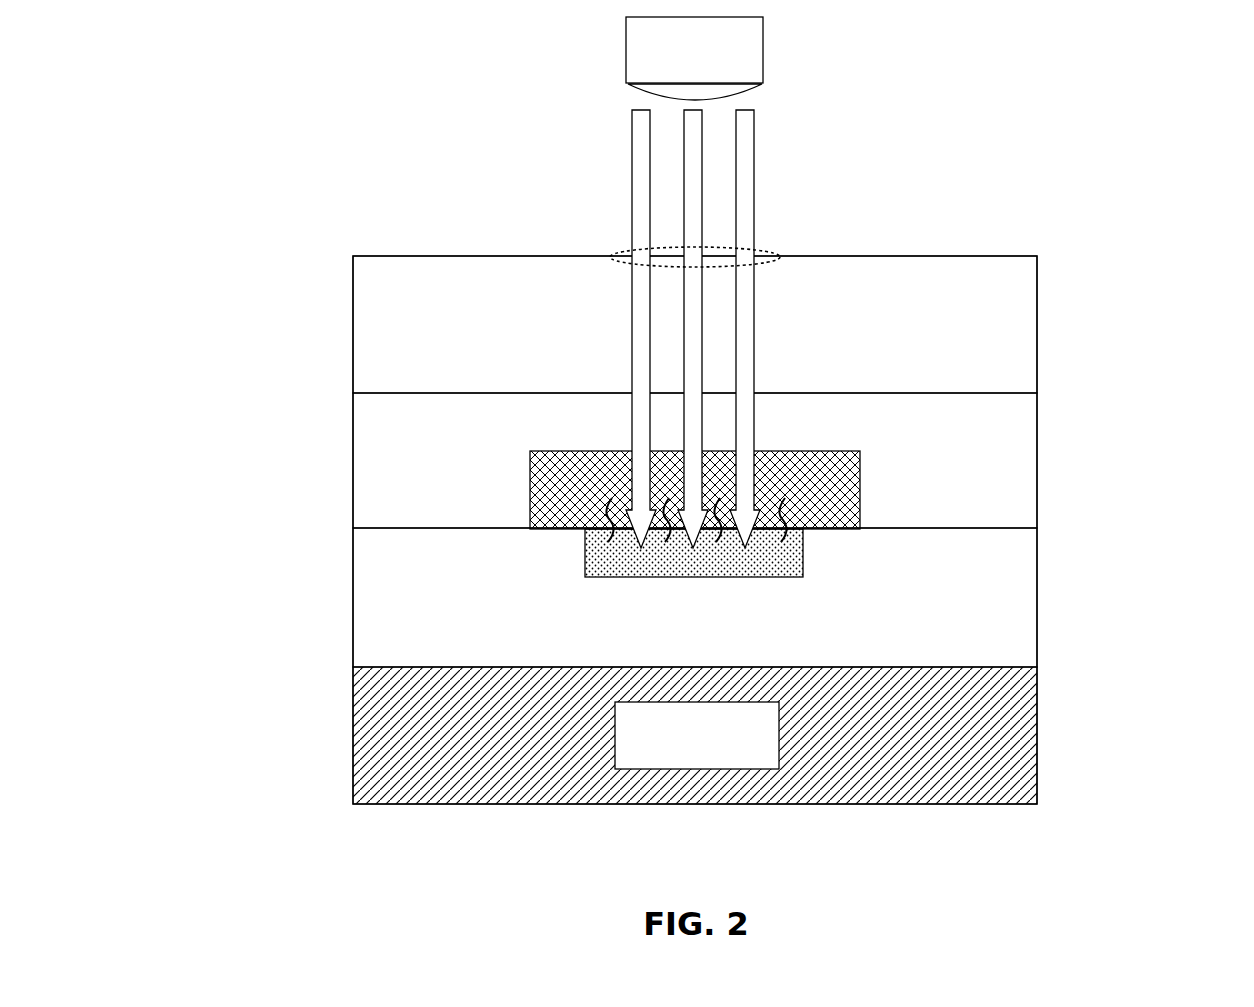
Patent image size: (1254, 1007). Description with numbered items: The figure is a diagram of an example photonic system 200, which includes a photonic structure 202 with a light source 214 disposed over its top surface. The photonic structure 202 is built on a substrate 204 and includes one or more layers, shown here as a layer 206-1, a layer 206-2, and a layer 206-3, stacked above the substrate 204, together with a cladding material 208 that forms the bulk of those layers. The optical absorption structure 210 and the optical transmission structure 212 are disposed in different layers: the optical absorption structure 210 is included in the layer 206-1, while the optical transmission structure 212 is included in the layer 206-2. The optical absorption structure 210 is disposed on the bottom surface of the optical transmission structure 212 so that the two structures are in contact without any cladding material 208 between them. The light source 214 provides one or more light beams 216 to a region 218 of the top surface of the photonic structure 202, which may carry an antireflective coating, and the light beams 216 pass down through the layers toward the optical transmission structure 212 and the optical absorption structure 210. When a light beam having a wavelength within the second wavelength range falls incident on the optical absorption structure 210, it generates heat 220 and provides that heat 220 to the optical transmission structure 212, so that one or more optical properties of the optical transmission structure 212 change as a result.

The photonic system 200 is at (210, 47).
The photonic structure 202 is at (313, 235).
The substrate 204 is at (695, 735).
The layer 206-1 is at (333, 610).
The layer 206-2 is at (333, 462).
The layer 206-3 is at (333, 325).
The cladding material 208 is at (410, 566).
The optical absorption structure 210 is at (791, 564).
The optical transmission structure 212 is at (822, 473).
The light source 214 is at (726, 49).
The light beams 216 is at (648, 206).
The region 218 is at (620, 247).
The heat 220 is at (791, 514).